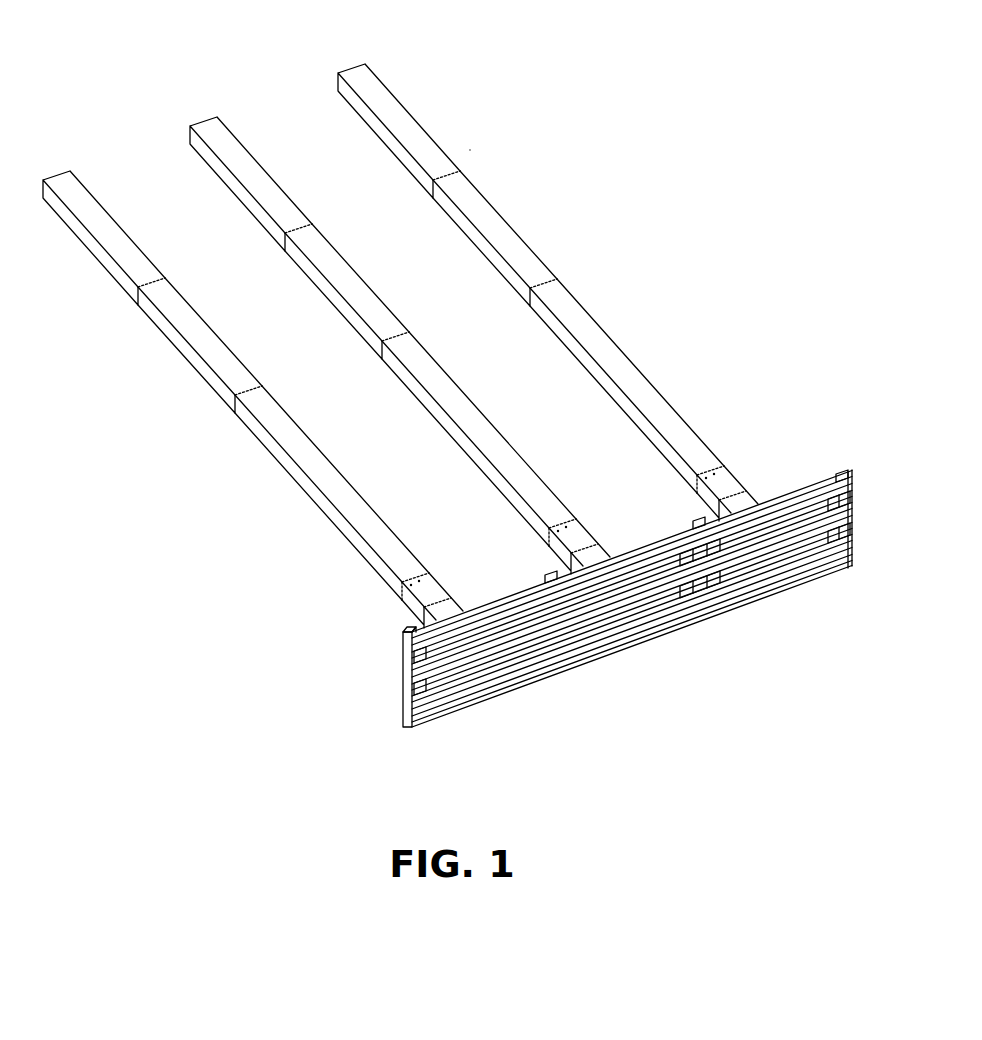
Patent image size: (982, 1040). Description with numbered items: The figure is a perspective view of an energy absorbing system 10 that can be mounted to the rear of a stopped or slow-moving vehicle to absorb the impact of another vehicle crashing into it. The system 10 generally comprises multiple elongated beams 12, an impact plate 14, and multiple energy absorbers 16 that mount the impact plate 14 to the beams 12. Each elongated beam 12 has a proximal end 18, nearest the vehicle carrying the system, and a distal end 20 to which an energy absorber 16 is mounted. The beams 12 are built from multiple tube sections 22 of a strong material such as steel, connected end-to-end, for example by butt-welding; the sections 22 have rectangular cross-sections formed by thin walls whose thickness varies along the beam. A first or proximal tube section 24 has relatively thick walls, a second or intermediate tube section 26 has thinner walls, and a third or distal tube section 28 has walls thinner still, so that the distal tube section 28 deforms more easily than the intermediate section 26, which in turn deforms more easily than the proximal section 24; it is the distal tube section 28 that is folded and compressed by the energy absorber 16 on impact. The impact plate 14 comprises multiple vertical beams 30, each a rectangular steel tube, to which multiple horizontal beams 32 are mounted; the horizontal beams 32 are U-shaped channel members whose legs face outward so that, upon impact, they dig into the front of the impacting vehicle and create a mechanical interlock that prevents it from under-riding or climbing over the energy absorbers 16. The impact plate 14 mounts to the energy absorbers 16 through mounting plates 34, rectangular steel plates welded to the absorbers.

The energy absorbing system 10 is at (810, 136).
The elongated beams 12 is at (362, 60).
The impact plate 14 is at (732, 683).
The energy absorbers 16 is at (471, 580).
The proximal ends 18 is at (102, 164).
The distal ends 20 is at (364, 584).
The tube sections 22 is at (479, 145).
The proximal tube section 24 is at (87, 237).
The intermediate tube section 26 is at (190, 350).
The distal tube section 28 is at (317, 493).
The vertical beams 30 is at (425, 703).
The horizontal beams 32 is at (408, 713).
The mounting plates 34 is at (483, 675).